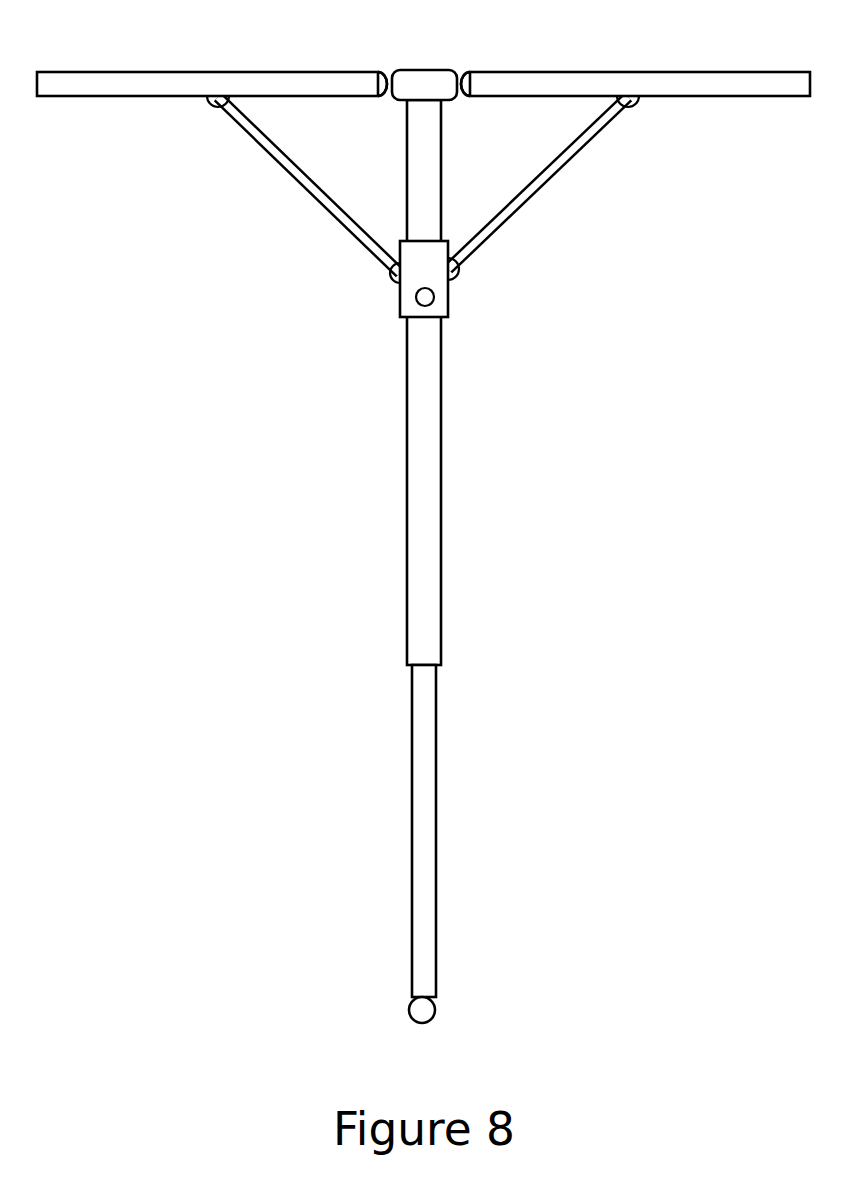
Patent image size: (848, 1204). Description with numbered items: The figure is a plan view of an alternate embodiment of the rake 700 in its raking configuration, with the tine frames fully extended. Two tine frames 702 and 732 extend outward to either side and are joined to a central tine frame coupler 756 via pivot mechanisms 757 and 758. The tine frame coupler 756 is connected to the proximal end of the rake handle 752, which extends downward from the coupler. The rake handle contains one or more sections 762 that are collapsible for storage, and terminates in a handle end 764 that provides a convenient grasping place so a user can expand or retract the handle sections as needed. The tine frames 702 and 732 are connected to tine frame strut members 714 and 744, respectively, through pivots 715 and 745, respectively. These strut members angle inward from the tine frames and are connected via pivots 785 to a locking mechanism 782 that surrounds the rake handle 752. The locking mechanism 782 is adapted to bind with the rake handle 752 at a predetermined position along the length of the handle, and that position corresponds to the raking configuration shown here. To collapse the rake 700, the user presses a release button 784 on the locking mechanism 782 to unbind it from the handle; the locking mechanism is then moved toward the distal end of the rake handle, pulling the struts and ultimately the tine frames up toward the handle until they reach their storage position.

The rake 700 is at (178, 273).
The tine frame 702 is at (163, 70).
The tine frame strut member 714 is at (280, 172).
The pivot 715 is at (218, 107).
The tine frame 732 is at (680, 70).
The tine frame strut member 744 is at (553, 195).
The pivot 745 is at (635, 108).
The rake handle 752 is at (442, 465).
The tine frame coupler 756 is at (405, 68).
The pivot mechanism 757 is at (380, 75).
The pivot mechanism 758 is at (465, 82).
The handle section 762 is at (437, 803).
The handle end 764 is at (437, 1002).
The locking mechanism 782 is at (448, 308).
The release button 784 is at (420, 305).
The pivot 785 is at (388, 277).